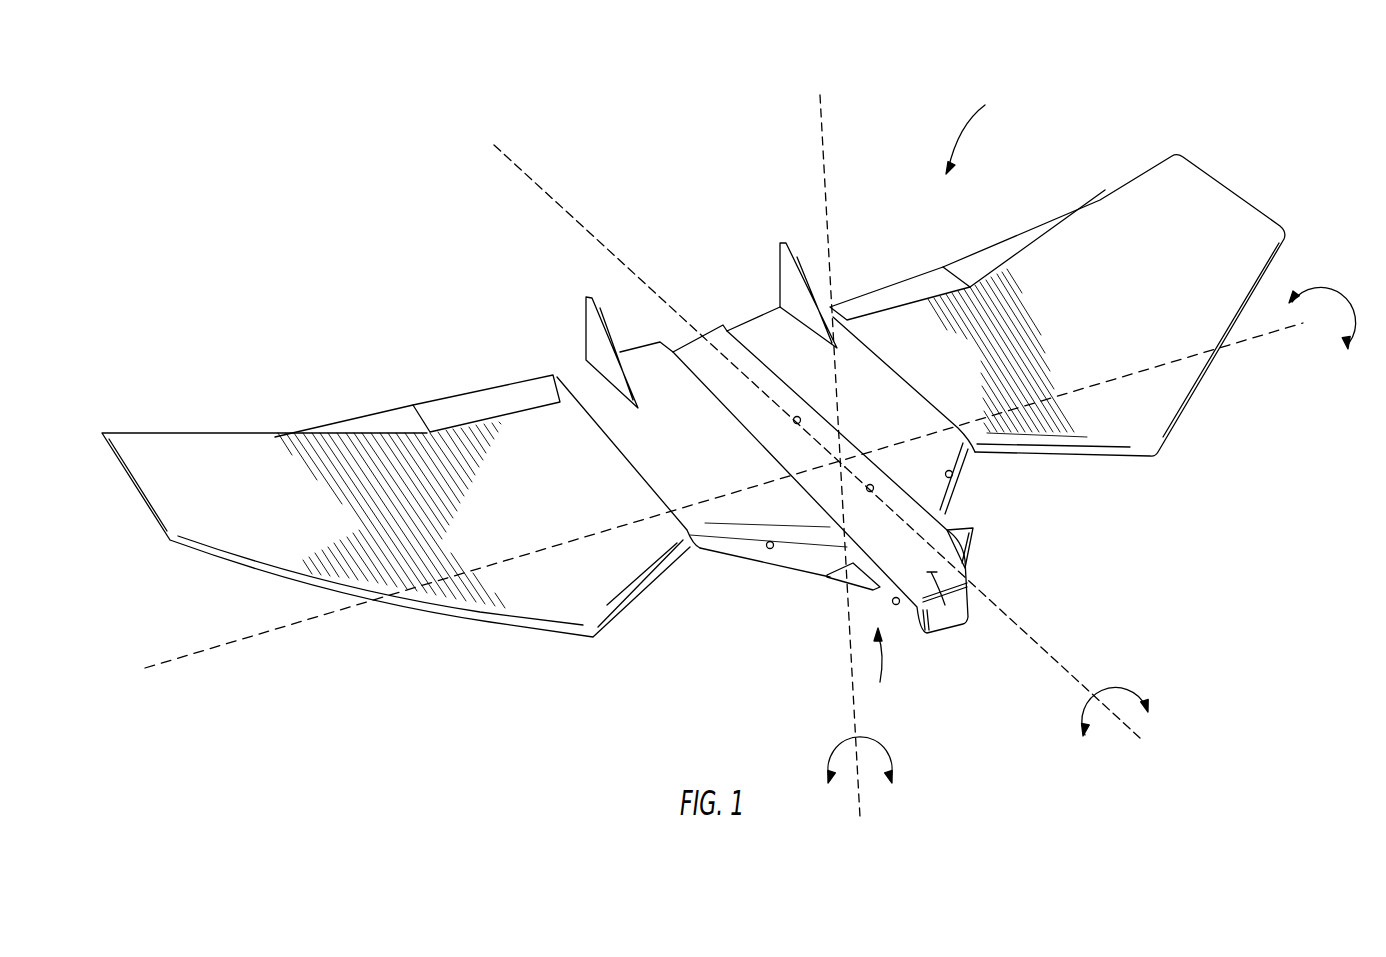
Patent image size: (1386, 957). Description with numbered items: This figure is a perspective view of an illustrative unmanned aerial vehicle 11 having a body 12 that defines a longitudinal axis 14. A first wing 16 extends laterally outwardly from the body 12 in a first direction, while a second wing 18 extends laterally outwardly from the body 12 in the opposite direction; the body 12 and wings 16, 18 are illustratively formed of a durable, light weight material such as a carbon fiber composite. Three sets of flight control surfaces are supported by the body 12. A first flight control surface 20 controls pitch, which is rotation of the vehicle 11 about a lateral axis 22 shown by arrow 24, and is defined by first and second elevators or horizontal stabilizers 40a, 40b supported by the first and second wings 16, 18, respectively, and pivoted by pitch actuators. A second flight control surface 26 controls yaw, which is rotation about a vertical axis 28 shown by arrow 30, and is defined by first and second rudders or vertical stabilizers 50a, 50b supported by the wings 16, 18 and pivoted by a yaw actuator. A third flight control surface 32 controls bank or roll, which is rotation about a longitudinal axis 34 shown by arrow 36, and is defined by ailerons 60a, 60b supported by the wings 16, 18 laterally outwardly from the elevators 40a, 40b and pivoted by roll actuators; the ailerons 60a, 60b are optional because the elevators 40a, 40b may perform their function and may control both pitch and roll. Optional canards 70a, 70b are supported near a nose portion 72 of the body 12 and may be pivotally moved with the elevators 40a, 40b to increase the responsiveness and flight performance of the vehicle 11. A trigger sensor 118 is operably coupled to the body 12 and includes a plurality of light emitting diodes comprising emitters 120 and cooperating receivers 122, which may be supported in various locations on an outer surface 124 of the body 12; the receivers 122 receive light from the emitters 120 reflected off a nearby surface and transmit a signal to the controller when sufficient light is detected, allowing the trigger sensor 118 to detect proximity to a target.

The unmanned aerial vehicle 11 is at (978, 128).
The body 12 is at (866, 516).
The longitudinal axis 14 is at (505, 140).
The first wing 16 is at (401, 490).
The second wing 18 is at (1106, 286).
The first flight control surface 20 is at (691, 321).
The lateral axis 22 is at (1293, 328).
The arrow 24 is at (1325, 290).
The second flight control surface 26 is at (787, 293).
The vertical axis 28 is at (868, 797).
The arrow 30 is at (870, 745).
The third flight control surface 32 is at (317, 423).
The longitudinal axis 34 is at (1143, 718).
The arrow 36 is at (1113, 680).
The first elevator 40a is at (453, 410).
The second elevator 40b is at (870, 300).
The first rudder 50a is at (590, 297).
The second rudder 50b is at (787, 240).
The aileron 60a is at (365, 430).
The aileron 60b is at (977, 253).
The canard 70a is at (838, 587).
The canard 70b is at (973, 532).
The nose portion 72 is at (940, 625).
The trigger sensor 118 is at (877, 672).
The emitter 120 is at (870, 491).
The receiver 122 is at (797, 424).
The outer surface 124 is at (945, 605).